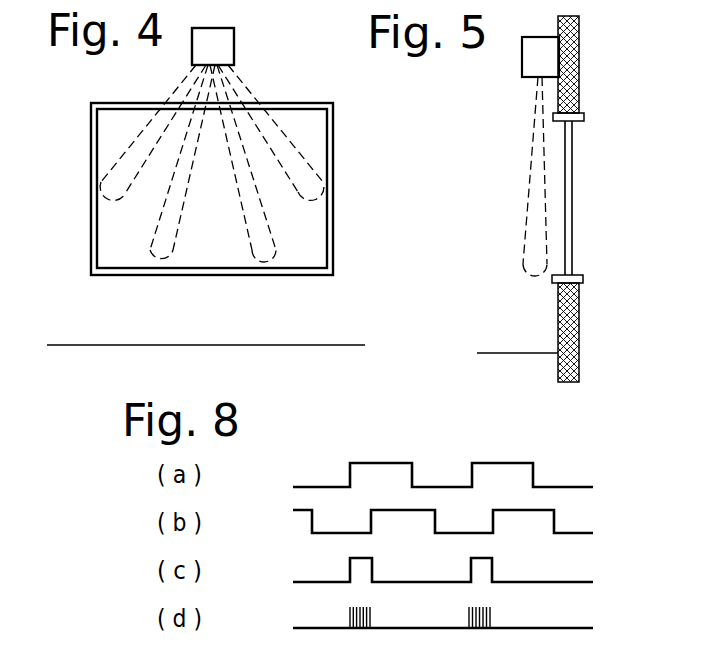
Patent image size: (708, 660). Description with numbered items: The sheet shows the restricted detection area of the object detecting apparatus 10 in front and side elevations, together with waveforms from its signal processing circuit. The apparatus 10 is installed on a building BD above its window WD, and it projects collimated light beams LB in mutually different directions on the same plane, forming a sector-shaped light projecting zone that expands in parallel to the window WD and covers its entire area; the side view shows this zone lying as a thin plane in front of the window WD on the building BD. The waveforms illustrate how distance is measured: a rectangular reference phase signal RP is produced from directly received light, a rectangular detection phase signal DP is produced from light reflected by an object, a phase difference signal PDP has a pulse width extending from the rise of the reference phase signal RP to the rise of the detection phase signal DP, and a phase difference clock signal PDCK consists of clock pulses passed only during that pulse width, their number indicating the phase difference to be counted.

In FIG. 4, the object detecting apparatus 10 is at (227, 52).
In FIG. 5, the object detecting apparatus 10 is at (530, 64).
In FIG. 4, the light beam LB is at (245, 90).
In FIG. 5, the light beam LB is at (528, 187).
In FIG. 4, the window WD is at (317, 230).
In FIG. 5, the window WD is at (573, 192).
In FIG. 4, the building BD is at (225, 313).
In FIG. 5, the building BD is at (580, 65).
In FIG. 8, the reference phase signal RP is at (350, 470).
In FIG. 8, the detection phase signal DP is at (371, 516).
In FIG. 8, the phase difference signal PDP is at (350, 568).
In FIG. 8, the phase difference clock signal PDCK is at (350, 614).